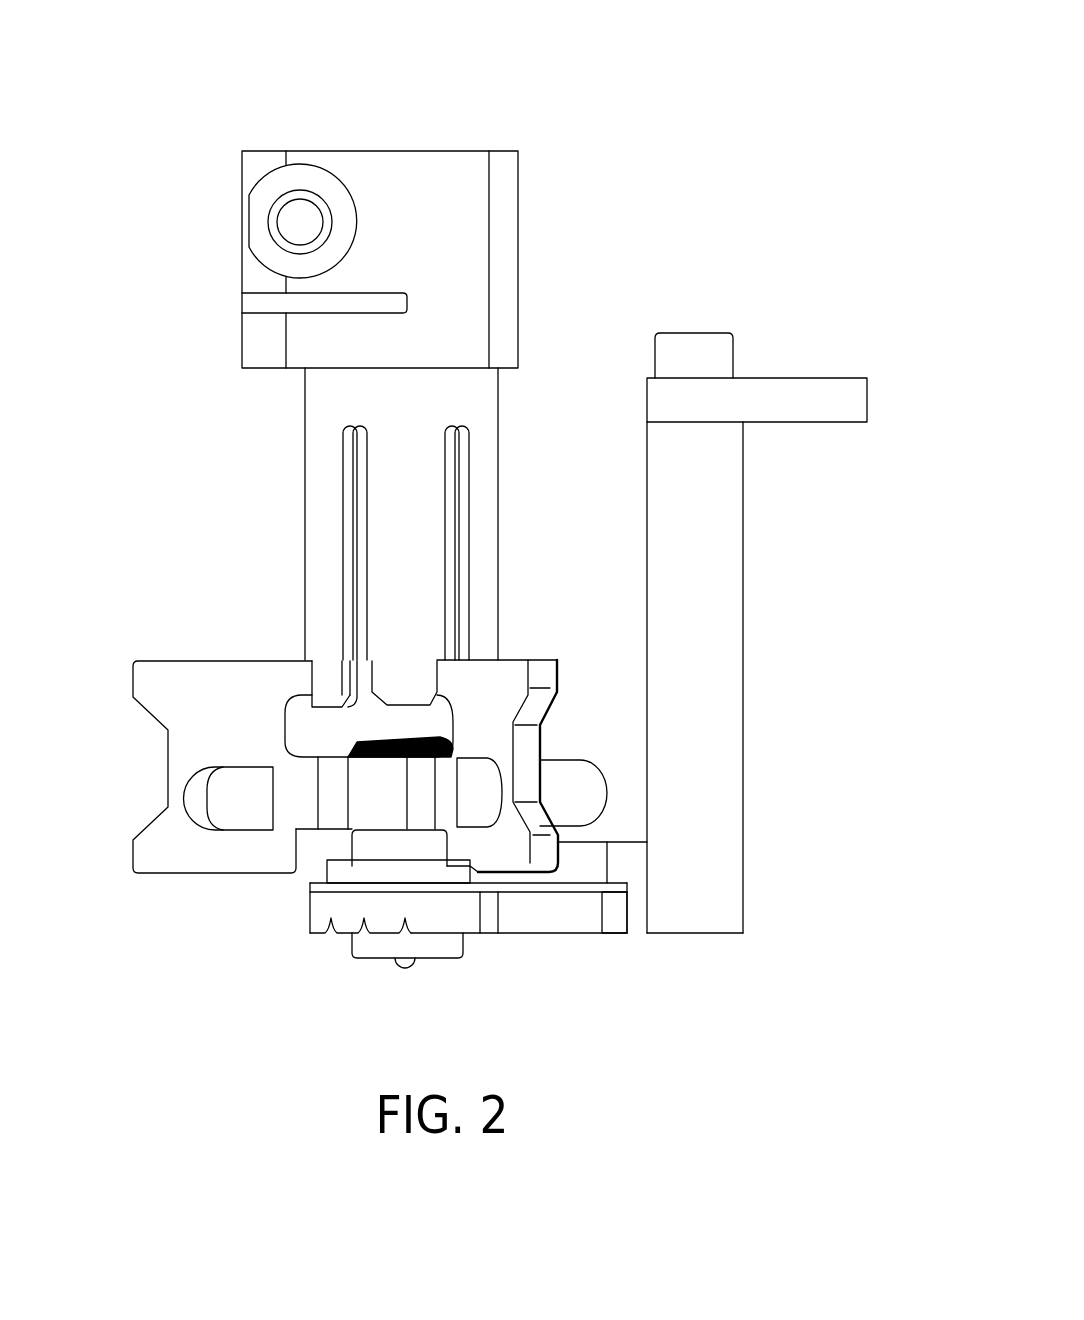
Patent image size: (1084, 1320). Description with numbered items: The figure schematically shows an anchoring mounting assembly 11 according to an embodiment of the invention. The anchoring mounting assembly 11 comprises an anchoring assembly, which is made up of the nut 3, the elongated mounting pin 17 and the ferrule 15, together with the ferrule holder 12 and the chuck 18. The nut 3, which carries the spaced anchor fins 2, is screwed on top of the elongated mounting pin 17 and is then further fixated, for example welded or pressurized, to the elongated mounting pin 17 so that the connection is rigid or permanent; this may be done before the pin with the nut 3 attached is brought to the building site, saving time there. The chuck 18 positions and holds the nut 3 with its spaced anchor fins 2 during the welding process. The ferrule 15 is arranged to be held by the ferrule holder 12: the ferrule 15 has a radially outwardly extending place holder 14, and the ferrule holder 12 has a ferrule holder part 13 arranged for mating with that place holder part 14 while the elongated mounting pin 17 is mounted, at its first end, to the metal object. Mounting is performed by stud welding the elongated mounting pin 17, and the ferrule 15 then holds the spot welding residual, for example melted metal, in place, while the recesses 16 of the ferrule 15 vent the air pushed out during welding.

The anchoring mounting assembly 11 is at (613, 97).
The chuck 18 is at (412, 182).
The spaced anchor fins 2 is at (183, 676).
The nut 3 is at (385, 797).
The ferrule holder 12 is at (720, 578).
The ferrule holder part 13 is at (639, 912).
The radially outwardly extending place holder 14 is at (562, 920).
The ferrule 15 is at (327, 907).
The recesses 16 is at (403, 924).
The elongated mounting pin 17 is at (373, 845).